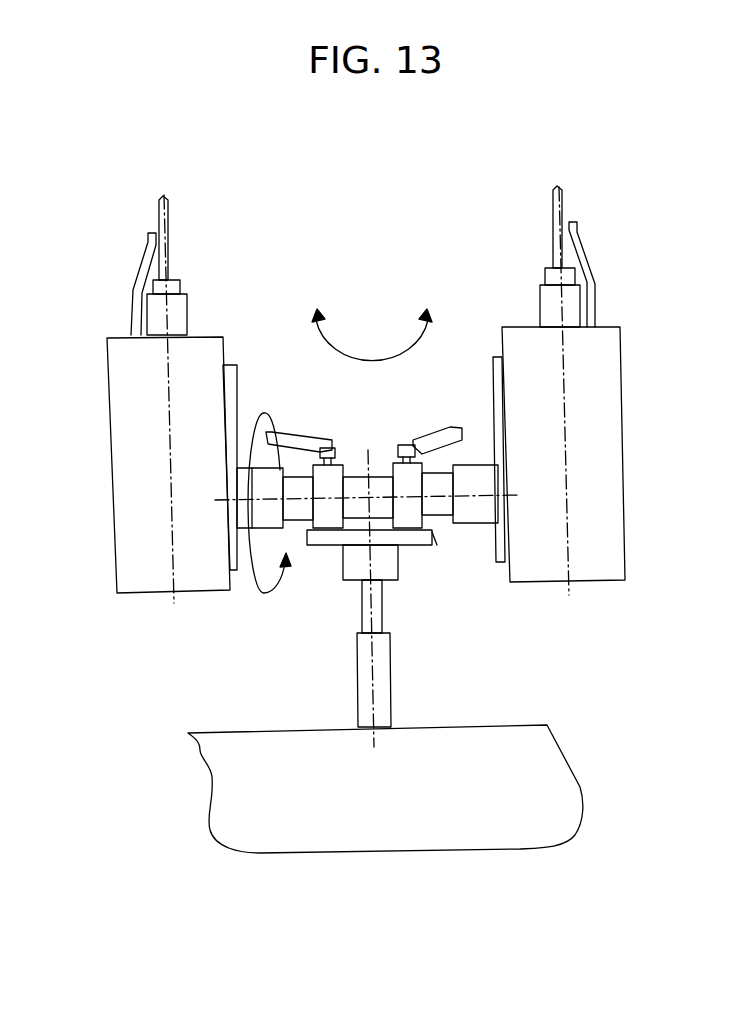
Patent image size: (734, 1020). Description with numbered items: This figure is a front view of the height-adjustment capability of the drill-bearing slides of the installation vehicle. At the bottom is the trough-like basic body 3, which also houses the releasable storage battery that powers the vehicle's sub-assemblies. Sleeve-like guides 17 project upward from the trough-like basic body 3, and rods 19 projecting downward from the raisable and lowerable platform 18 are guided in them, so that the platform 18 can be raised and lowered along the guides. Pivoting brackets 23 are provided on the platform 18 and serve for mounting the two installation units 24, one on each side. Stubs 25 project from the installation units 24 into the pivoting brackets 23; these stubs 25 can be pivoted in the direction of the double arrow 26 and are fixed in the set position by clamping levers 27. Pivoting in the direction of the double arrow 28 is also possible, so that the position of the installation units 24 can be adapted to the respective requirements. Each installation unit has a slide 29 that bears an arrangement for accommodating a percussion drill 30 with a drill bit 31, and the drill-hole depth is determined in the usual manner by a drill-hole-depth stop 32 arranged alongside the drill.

The trough-like basic body 3 is at (543, 767).
The sleeve-like guides 17 is at (380, 712).
The raisable and lowerable platform 18 is at (337, 546).
The rods 19 is at (375, 608).
The pivoting brackets 23 is at (330, 523).
The installation units 24 is at (370, 460).
The stubs 25 is at (443, 490).
The double arrow 26 is at (268, 413).
The clamping levers 27 is at (300, 438).
The double arrow 28 is at (372, 331).
The slide 29 is at (152, 498).
The percussion drill 30 is at (170, 290).
The drill bit 31 is at (168, 233).
The drill-hole-depth stop 32 is at (140, 277).